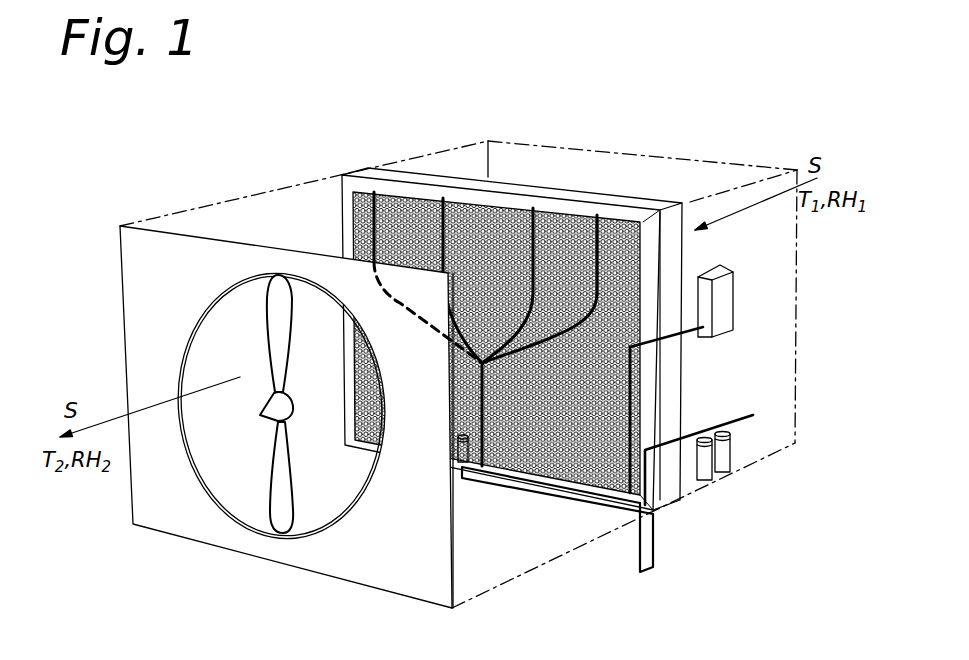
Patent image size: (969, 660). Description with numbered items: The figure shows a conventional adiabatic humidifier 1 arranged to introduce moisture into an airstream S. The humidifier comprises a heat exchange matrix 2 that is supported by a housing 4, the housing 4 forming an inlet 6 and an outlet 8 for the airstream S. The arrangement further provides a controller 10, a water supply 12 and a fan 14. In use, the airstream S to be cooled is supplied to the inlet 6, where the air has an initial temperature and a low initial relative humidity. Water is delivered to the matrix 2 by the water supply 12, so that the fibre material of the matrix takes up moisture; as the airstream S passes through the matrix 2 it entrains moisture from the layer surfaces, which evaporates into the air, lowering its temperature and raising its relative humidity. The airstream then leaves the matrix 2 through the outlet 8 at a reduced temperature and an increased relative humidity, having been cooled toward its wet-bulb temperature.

The adiabatic humidifier 1 is at (566, 126).
The heat exchange matrix 2 is at (403, 218).
The housing 4 is at (500, 192).
The inlet 6 is at (593, 178).
The outlet 8 is at (218, 232).
The controller 10 is at (737, 330).
The water supply 12 is at (483, 434).
The fan 14 is at (281, 290).